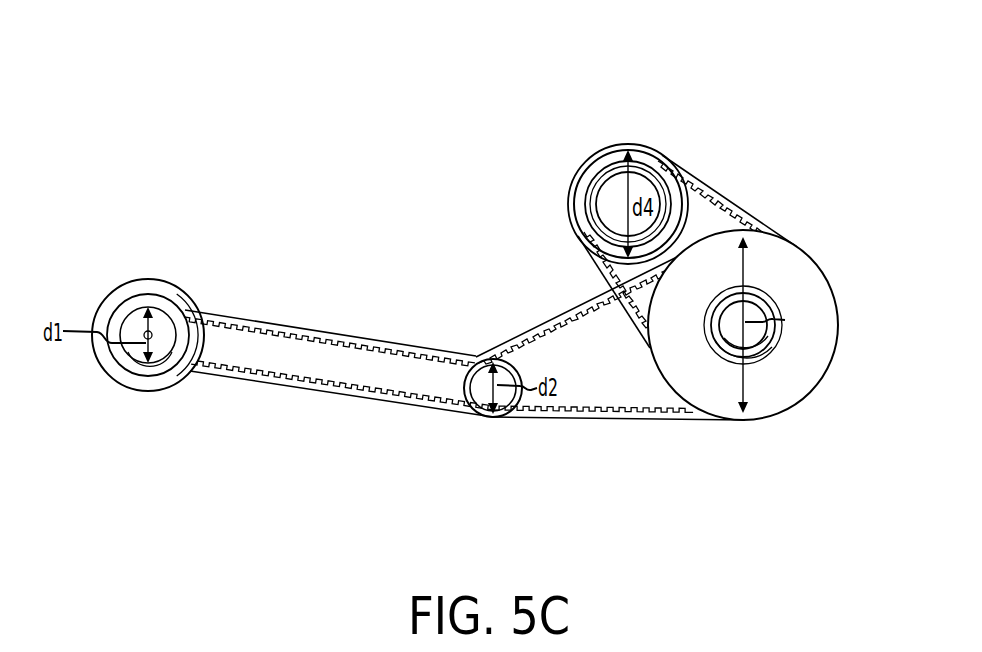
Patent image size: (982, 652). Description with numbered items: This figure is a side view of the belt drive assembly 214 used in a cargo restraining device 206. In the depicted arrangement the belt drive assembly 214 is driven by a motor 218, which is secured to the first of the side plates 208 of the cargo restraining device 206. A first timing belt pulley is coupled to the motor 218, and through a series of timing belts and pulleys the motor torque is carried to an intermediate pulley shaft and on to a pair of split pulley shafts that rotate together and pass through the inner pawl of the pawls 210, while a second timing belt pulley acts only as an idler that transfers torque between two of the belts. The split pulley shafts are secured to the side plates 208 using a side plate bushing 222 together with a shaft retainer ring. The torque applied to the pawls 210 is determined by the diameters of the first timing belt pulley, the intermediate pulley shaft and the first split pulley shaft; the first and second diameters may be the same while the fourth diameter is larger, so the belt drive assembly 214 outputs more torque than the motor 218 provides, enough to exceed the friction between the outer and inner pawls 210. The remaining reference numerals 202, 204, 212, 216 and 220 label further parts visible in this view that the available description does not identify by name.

The first pulley 202 is at (152, 283).
The pulley rim 204 is at (112, 343).
The cargo restraining device 206 is at (158, 360).
The side plate 208 is at (295, 389).
The pawl 210 is at (487, 392).
The idler pulley 212 is at (475, 357).
The belt drive assembly 214 is at (698, 121).
The pulley shaft 216 is at (593, 207).
The motor 218 is at (593, 185).
The belt strand 220 is at (720, 200).
The side plate bushing 222 is at (792, 403).